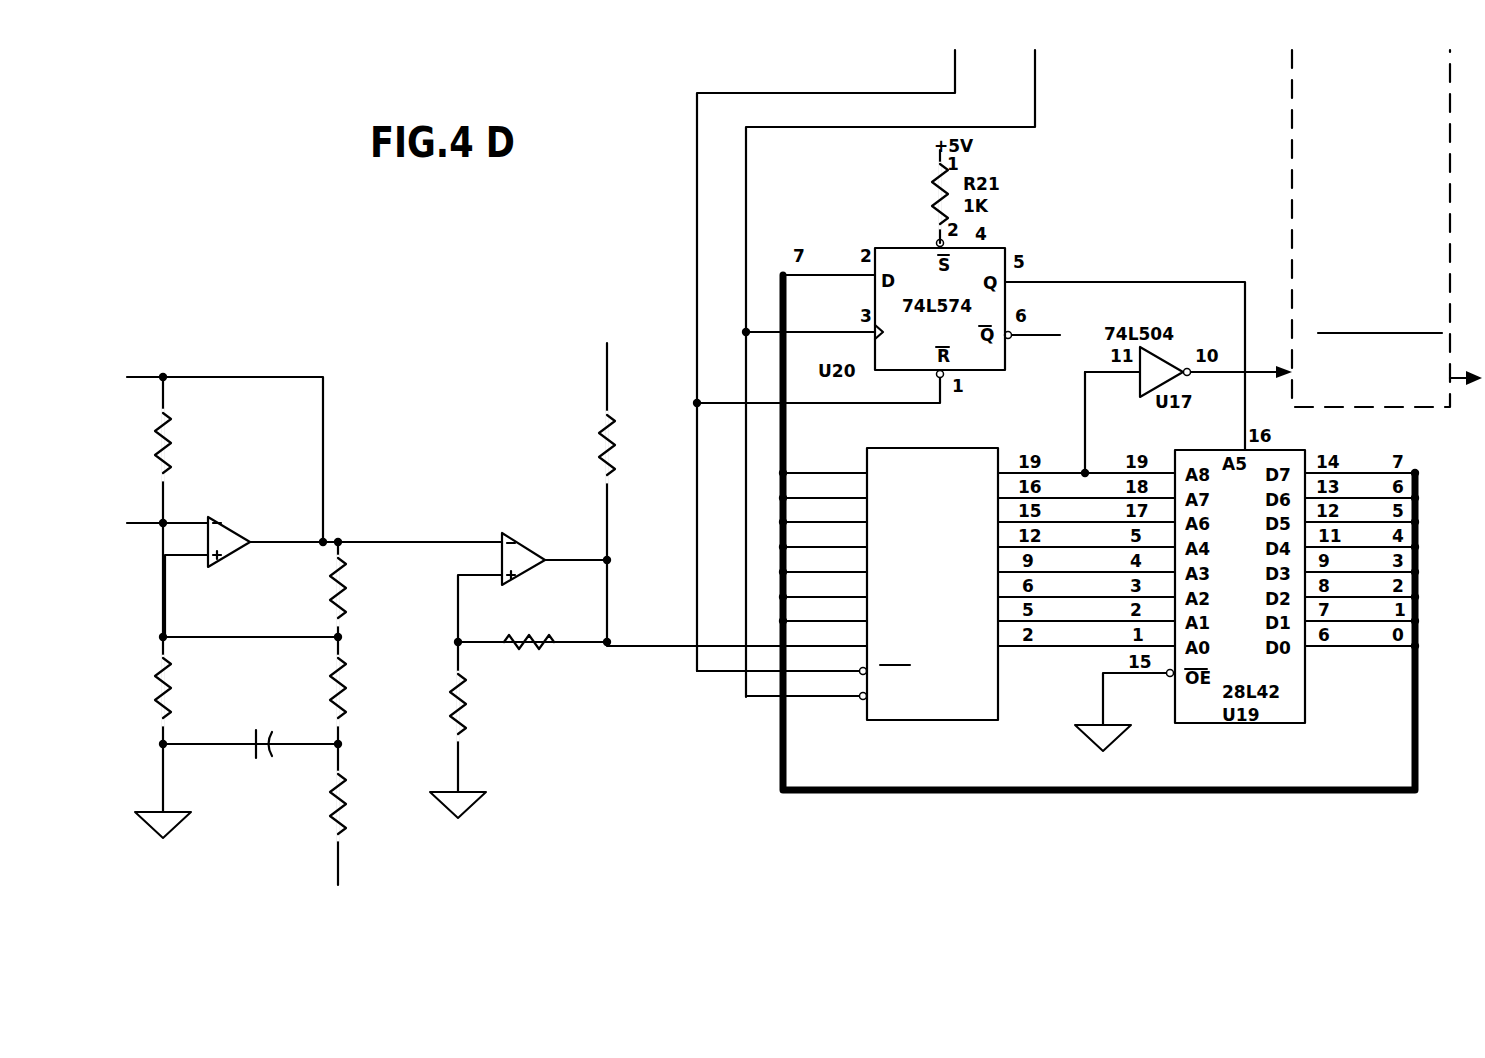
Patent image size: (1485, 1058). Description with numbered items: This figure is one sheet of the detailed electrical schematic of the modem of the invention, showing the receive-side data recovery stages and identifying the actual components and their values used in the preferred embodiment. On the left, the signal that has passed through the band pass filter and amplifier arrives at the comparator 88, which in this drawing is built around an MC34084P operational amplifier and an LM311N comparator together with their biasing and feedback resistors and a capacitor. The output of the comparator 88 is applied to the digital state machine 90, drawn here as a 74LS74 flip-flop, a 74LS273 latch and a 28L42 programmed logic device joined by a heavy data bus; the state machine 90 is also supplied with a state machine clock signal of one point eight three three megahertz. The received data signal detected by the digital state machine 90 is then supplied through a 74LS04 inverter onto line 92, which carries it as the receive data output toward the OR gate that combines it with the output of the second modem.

The comparator 88 is at (484, 410).
The digital state machine 90 is at (755, 713).
The line 92 is at (1250, 370).